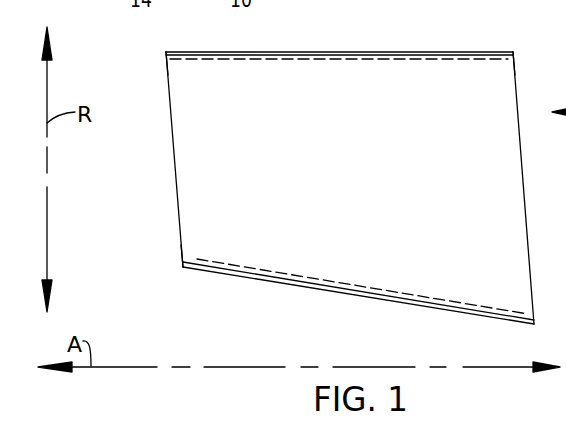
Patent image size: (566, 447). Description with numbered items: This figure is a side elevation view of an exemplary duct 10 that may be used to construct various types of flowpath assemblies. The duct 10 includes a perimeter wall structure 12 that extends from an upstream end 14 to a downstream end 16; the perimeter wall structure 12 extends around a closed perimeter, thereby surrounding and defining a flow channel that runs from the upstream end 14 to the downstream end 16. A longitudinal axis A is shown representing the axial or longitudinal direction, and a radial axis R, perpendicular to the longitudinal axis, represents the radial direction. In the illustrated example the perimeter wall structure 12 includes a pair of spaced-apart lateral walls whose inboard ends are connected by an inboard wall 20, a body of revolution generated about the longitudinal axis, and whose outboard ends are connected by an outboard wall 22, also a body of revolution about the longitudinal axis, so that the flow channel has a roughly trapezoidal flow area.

The duct 10 is at (305, 47).
The perimeter wall structure 12 is at (177, 52).
The upstream end 14 is at (182, 262).
The downstream end 16 is at (515, 53).
The inboard wall 20 is at (360, 290).
The outboard wall 22 is at (395, 60).